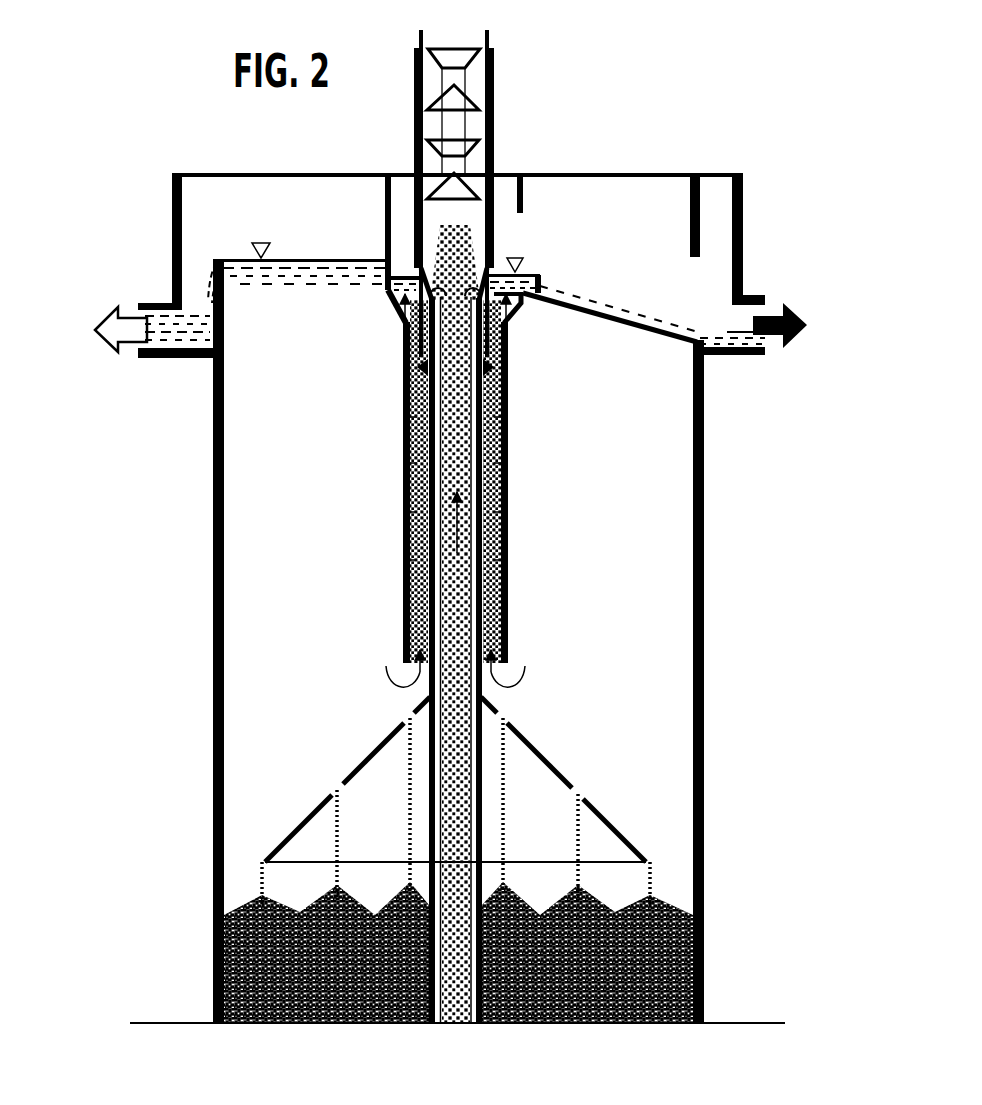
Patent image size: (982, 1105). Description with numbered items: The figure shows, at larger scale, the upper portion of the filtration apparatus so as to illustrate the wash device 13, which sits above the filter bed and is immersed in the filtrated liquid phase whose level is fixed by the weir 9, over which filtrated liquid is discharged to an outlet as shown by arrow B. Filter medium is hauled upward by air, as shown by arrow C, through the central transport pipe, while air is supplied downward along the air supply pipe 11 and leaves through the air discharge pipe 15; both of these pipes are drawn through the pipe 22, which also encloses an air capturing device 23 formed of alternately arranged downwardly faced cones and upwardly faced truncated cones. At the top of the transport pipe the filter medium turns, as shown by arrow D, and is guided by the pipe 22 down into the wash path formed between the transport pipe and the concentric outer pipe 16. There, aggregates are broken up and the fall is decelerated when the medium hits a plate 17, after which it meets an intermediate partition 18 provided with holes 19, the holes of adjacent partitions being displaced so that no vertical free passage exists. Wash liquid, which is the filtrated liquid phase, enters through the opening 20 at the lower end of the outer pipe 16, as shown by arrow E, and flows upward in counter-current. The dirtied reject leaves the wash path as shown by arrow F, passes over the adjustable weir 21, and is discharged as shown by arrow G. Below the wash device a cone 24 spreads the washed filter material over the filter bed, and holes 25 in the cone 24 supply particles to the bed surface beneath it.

The weir 9 is at (215, 258).
The air supply pipe 11 is at (418, 38).
The wash device 13 is at (510, 537).
The air discharge pipe 15 is at (490, 38).
The outer pipe 16 is at (505, 478).
The plate 17 is at (487, 372).
The intermediate partition 18 is at (402, 430).
The holes 19 is at (497, 425).
The opening 20 is at (407, 668).
The weir 21 is at (540, 278).
The pipe 22 is at (414, 105).
The air capturing device 23 is at (470, 88).
The cone 24 is at (530, 738).
The holes 25 is at (580, 790).
The outlet flow arrow B is at (142, 329).
The filter medium transport arrow C is at (452, 530).
The filter medium turning arrow D is at (493, 266).
The wash liquid supply arrow E is at (518, 663).
The reject discharge arrow F is at (396, 322).
The reject outlet arrow G is at (792, 325).